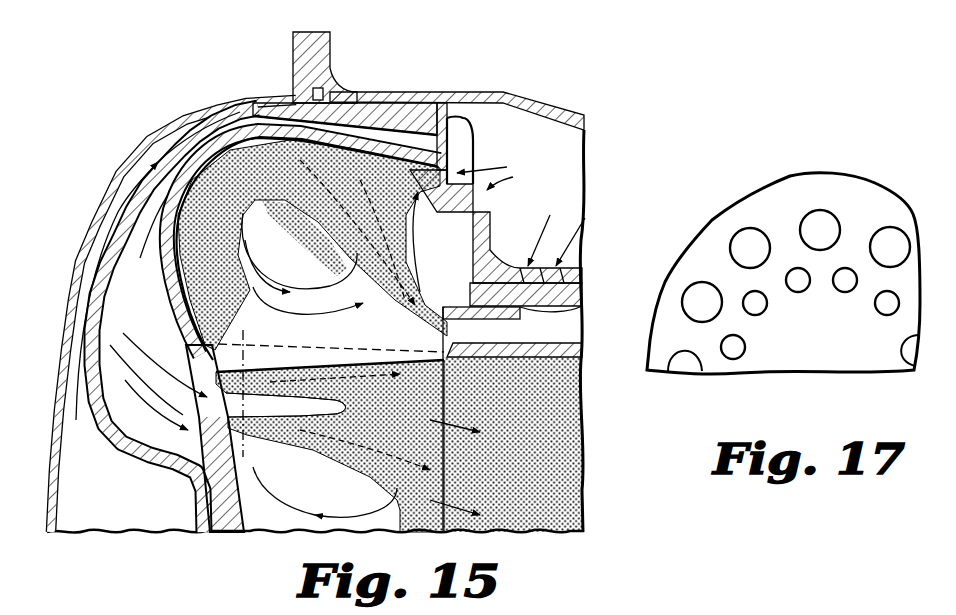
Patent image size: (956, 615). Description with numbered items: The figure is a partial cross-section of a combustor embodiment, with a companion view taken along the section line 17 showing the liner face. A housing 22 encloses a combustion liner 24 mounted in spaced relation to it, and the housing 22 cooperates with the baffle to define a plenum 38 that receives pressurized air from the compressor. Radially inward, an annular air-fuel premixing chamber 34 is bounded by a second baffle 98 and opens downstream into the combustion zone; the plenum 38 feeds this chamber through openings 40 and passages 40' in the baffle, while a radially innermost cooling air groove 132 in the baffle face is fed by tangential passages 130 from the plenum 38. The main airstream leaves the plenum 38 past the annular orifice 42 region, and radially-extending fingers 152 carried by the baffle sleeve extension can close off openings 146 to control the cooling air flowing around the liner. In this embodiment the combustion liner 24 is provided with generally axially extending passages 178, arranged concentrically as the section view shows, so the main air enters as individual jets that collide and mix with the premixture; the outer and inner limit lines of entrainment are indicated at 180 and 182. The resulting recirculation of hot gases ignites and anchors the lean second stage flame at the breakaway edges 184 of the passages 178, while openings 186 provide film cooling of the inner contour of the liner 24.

In FIG. 15, the combustion liner 24 is at (272, 100).
In FIG. 15, the openings 186 is at (215, 137).
In FIG. 15, the housing 22 is at (480, 92).
In FIG. 15, the radially-extending fingers 152 is at (452, 117).
In FIG. 15, the annular orifice 42 is at (424, 137).
In FIG. 15, the openings 146 is at (433, 145).
In FIG. 15, the passages 130 is at (477, 203).
In FIG. 15, the plenum 38 is at (567, 137).
In FIG. 15, the openings 40 is at (550, 247).
In FIG. 15, the passages 40' is at (550, 303).
In FIG. 15, the radially innermost cooling air groove 132 is at (470, 322).
In FIG. 15, the air-fuel premixing chamber 34 is at (568, 335).
In FIG. 15, the second baffle 98 is at (580, 349).
In FIG. 15, the outer limit line of entrainment and mixing 180 is at (315, 365).
In FIG. 15, the axially extending passages 178 is at (200, 395).
In FIG. 17, the axially extending passages 178 is at (880, 250).
In FIG. 15, the breakaway edges 184 is at (240, 398).
In FIG. 17, the breakaway edges 184 is at (885, 305).
In FIG. 15, the inner limit line of entrainment and mixing 182 is at (296, 445).
In FIG. 15, the section line 17 is at (270, 342).